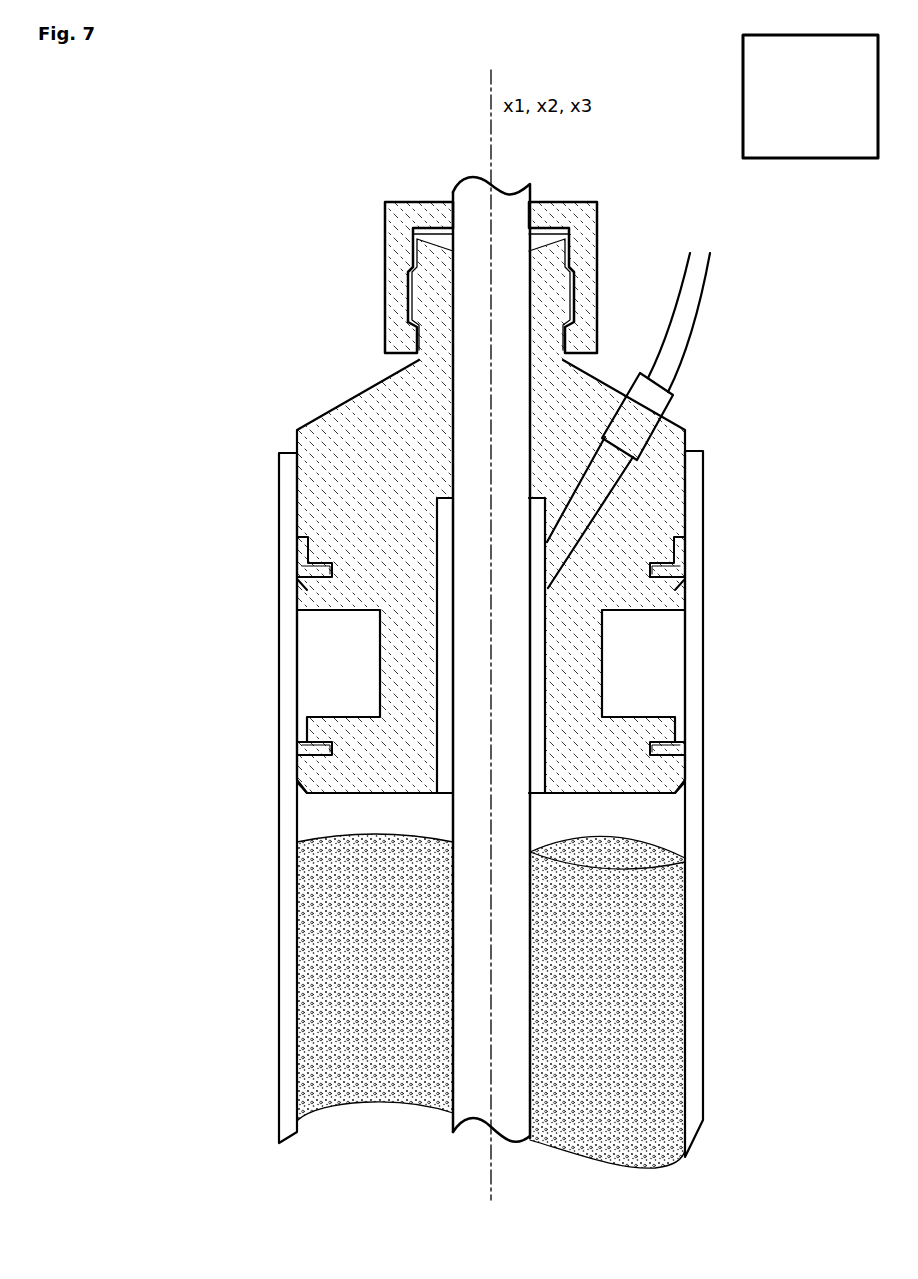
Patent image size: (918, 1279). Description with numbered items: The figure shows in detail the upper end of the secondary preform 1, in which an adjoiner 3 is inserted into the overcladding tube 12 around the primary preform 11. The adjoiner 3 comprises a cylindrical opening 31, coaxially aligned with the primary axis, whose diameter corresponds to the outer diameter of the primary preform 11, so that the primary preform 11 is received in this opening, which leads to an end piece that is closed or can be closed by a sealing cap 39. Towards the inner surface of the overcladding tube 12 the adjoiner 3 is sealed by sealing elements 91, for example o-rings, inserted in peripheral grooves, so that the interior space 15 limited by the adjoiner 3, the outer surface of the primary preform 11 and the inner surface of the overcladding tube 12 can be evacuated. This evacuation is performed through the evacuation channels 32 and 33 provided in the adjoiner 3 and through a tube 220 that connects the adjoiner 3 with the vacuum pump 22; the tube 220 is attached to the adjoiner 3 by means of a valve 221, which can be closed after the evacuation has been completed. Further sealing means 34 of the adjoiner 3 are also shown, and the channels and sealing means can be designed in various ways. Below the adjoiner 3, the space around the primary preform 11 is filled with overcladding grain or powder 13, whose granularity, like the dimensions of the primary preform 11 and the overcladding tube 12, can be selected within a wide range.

The secondary preform 1 is at (520, 804).
The adjoiner 3 is at (347, 400).
The primary preform 11 is at (287, 915).
The overcladding tube 12 is at (470, 968).
The overcladding grain or powder 13 is at (378, 1002).
The interior space 15 is at (375, 812).
The vacuum pump 22 is at (810, 96).
The cylindrical opening 31 is at (536, 275).
The evacuation channel 32 is at (537, 610).
The evacuation channel 33 is at (576, 522).
The sealing means 34 is at (675, 735).
The sealing cap 39 is at (410, 200).
The sealing element 91 is at (668, 570).
The tube 220 is at (673, 343).
The valve 221 is at (640, 409).